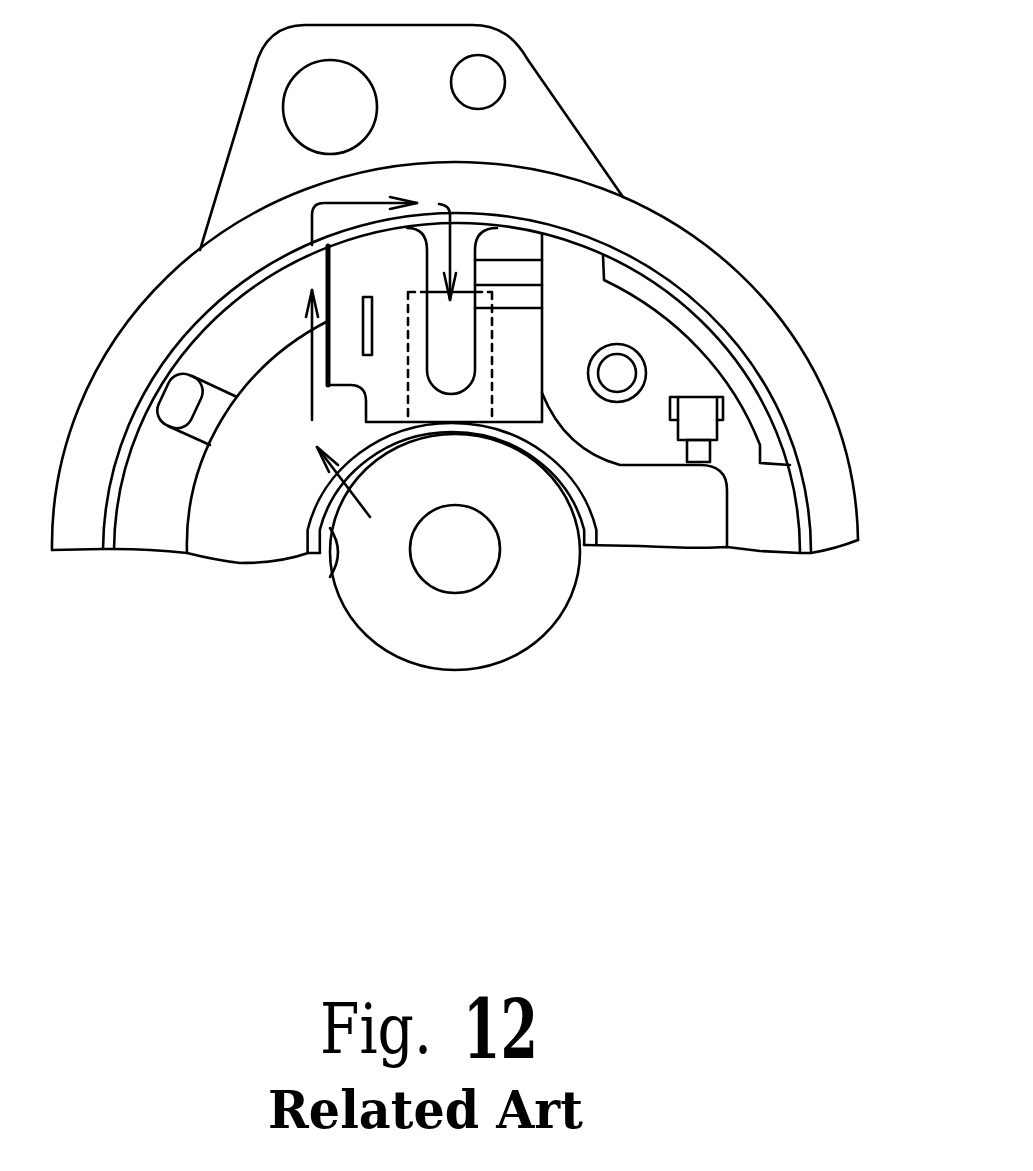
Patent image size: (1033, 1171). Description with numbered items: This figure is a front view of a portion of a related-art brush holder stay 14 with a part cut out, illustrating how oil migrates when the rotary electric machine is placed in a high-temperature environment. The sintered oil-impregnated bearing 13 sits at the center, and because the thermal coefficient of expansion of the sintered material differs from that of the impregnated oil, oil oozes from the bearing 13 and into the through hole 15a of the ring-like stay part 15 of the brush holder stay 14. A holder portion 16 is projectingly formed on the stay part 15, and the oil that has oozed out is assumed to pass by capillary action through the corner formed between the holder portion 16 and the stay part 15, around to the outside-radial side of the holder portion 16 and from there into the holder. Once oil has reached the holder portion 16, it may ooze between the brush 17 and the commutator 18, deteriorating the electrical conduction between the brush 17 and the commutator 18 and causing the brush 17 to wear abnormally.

The sintered oil-impregnated bearing 13 is at (533, 587).
The brush holder stay 14 is at (808, 312).
The stay part 15 is at (680, 377).
The through hole 15a is at (328, 578).
The holder portion 16 is at (515, 357).
The brush 17 is at (485, 427).
The commutator 18 is at (505, 607).